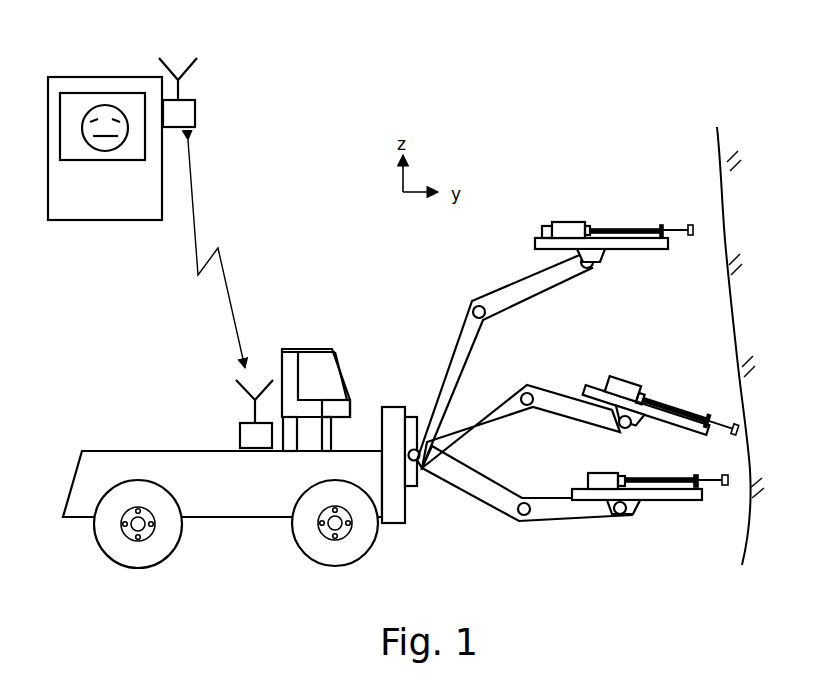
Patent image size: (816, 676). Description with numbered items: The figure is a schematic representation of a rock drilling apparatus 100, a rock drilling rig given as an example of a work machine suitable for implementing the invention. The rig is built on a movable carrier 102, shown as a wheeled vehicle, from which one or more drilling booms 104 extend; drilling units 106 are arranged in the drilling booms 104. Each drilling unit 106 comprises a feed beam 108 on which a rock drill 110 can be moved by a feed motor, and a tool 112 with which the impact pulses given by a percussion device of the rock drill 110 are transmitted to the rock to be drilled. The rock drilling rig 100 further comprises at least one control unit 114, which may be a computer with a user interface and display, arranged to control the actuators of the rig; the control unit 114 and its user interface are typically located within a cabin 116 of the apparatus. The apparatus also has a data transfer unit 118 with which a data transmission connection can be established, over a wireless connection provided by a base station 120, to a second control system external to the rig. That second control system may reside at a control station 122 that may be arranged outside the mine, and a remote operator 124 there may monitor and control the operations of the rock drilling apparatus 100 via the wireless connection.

The rock drilling apparatus 100 is at (118, 368).
The movable carrier 102 is at (250, 502).
The drilling boom 104 is at (498, 298).
The drilling unit 106 is at (603, 196).
The feed beam 108 is at (658, 249).
The rock drill 110 is at (572, 228).
The tool 112 is at (683, 225).
The control unit 114 is at (340, 412).
The cabin 116 is at (310, 357).
The data transfer unit 118 is at (250, 423).
The base station 120 is at (195, 113).
The control station 122 is at (95, 210).
The remote operator 124 is at (90, 110).